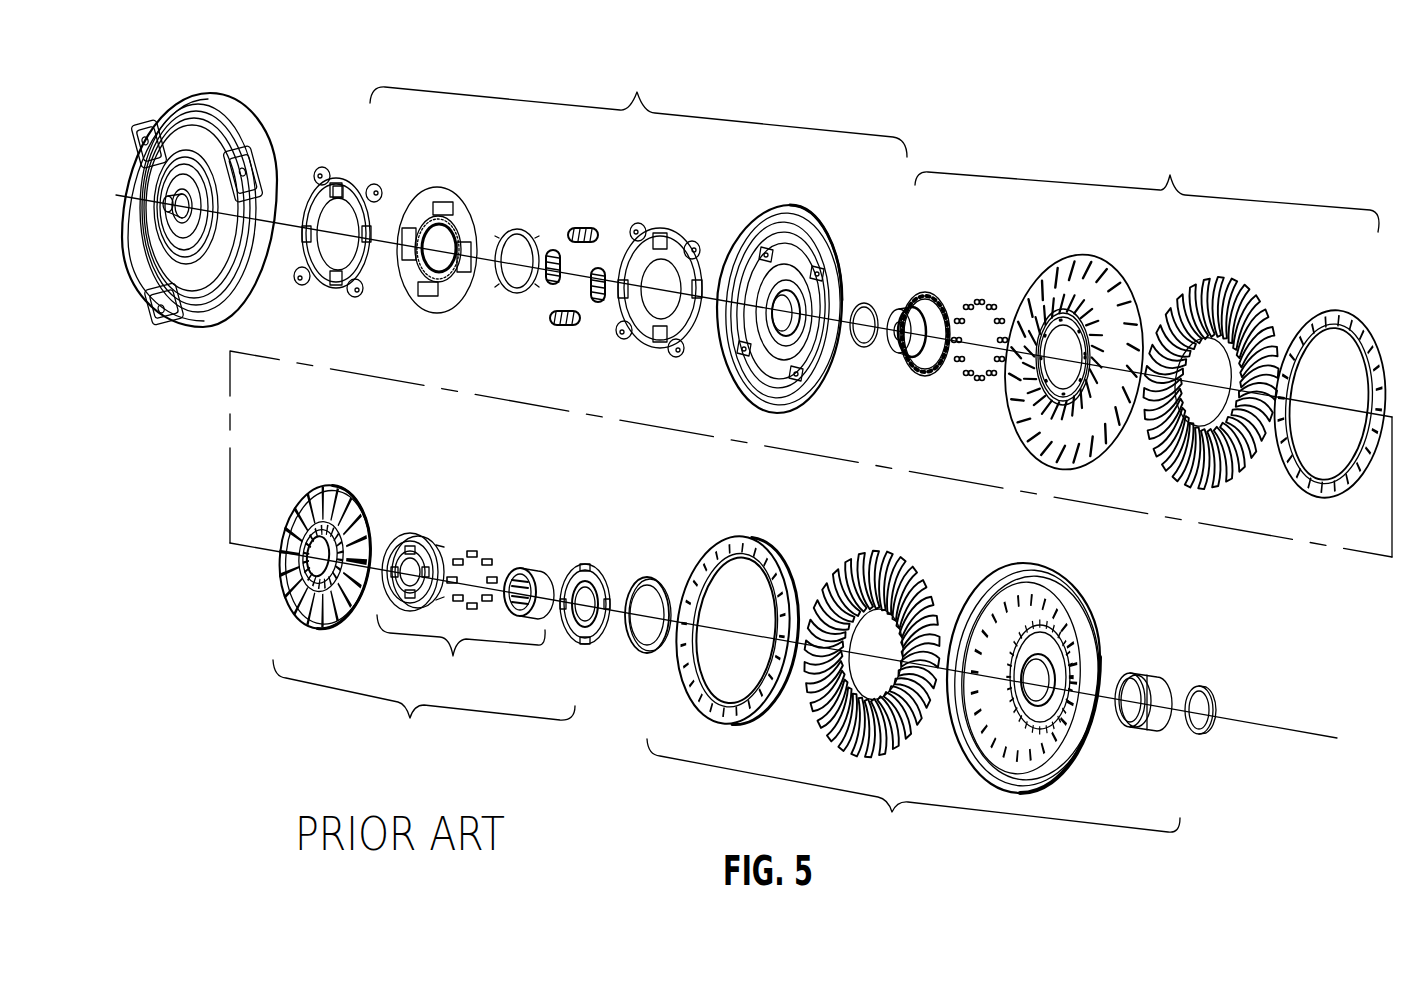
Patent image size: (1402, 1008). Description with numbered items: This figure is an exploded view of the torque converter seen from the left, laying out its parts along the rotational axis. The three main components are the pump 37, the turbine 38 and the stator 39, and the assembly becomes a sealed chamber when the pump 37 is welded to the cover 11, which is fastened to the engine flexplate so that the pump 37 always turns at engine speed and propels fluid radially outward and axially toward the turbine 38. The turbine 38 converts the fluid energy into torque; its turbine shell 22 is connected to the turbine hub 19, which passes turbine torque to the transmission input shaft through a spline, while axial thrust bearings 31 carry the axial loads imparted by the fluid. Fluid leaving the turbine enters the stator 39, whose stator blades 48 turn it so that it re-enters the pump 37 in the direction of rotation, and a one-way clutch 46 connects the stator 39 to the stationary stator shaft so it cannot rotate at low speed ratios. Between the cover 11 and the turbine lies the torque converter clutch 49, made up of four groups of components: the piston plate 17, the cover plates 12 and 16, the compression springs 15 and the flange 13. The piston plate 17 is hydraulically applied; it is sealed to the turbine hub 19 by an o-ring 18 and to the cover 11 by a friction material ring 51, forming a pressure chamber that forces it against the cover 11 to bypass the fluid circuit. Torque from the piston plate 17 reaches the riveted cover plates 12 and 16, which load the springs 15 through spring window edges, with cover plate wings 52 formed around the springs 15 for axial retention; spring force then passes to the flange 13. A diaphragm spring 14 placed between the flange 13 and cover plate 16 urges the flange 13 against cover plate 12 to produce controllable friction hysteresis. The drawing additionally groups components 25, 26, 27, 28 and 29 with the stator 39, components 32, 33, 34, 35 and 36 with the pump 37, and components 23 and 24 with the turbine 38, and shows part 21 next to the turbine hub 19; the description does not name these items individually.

The cover 11 is at (288, 126).
The cover plate 12 is at (376, 166).
The flange 13 is at (476, 180).
The diaphragm spring 14 is at (531, 215).
The compression springs 15 is at (613, 210).
The cover plate 16 is at (698, 210).
The piston plate 17 is at (838, 203).
The o-ring 18 is at (888, 280).
The turbine hub 19 is at (946, 276).
The roller bearings 21 is at (996, 292).
The turbine shell 22 is at (1108, 258).
The turbine blades 23 is at (1233, 285).
The turbine core ring 24 is at (1338, 300).
The stator 25 is at (366, 476).
The one-way clutch inner race 26 is at (438, 518).
The one-way clutch rollers 27 is at (488, 538).
The needle bearing 28 is at (551, 550).
The thrust washer 29 is at (608, 548).
The axial thrust bearings 31 is at (674, 558).
The impeller core ring 32 is at (793, 545).
The impeller blades 33 is at (943, 562).
The impeller shell 34 is at (1106, 592).
The pump hub 35 is at (1161, 659).
The bushing 36 is at (1221, 677).
The pump 37 is at (913, 793).
The turbine 38 is at (1147, 189).
The stator 39 is at (424, 708).
The one-way clutch 46 is at (461, 654).
The stator blades 48 is at (336, 488).
The torque converter clutch 49 is at (638, 109).
The friction material ring 51 is at (785, 213).
The cover plate wings 52 is at (342, 186).